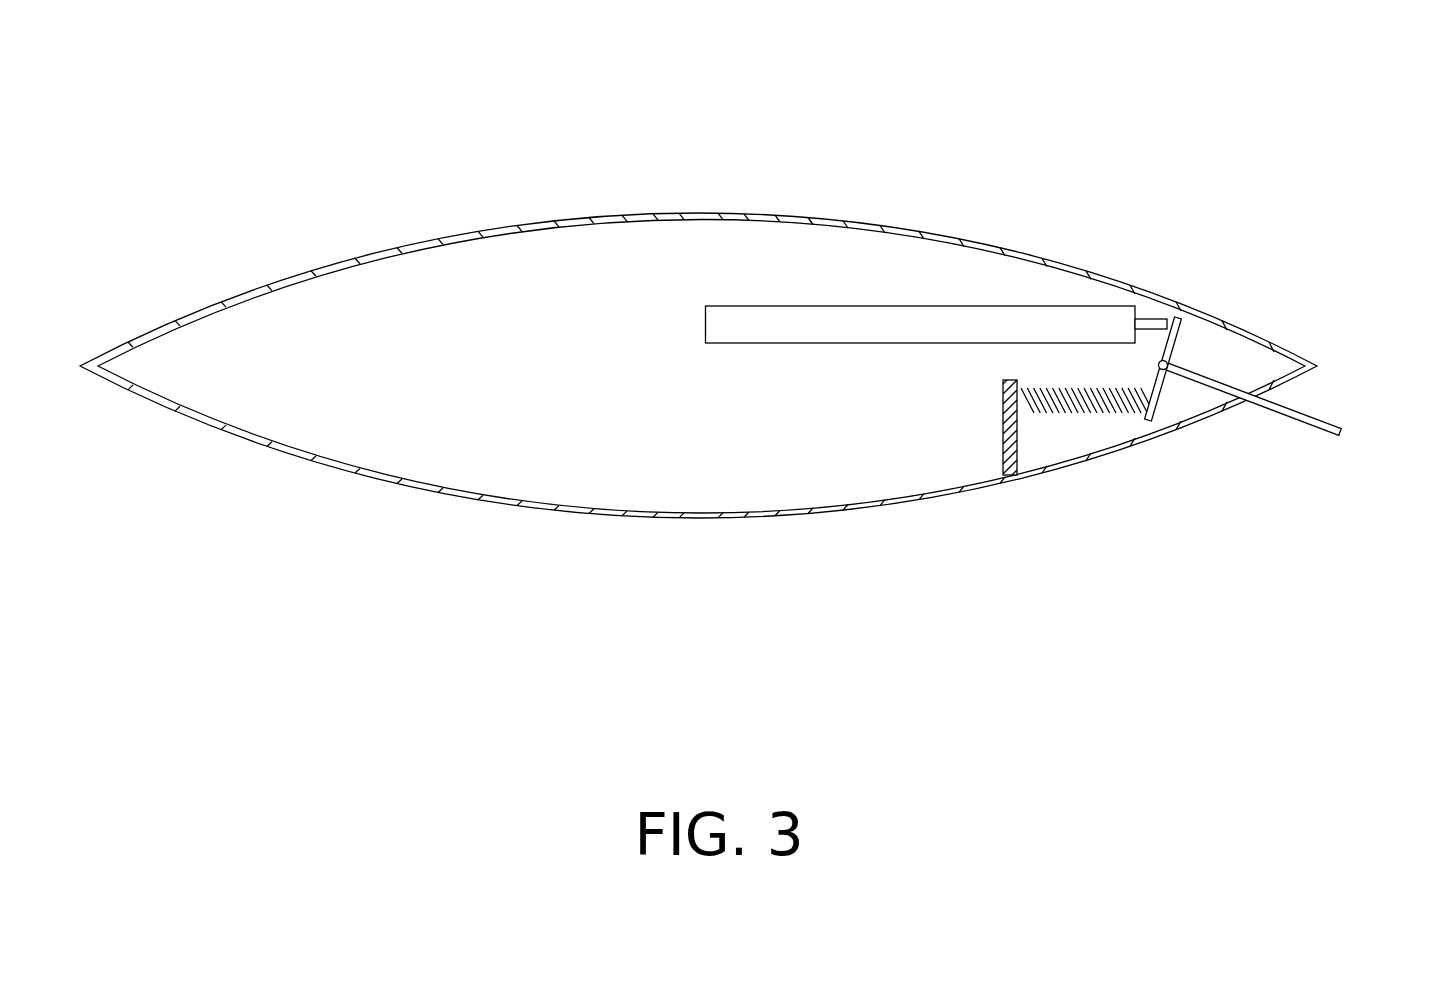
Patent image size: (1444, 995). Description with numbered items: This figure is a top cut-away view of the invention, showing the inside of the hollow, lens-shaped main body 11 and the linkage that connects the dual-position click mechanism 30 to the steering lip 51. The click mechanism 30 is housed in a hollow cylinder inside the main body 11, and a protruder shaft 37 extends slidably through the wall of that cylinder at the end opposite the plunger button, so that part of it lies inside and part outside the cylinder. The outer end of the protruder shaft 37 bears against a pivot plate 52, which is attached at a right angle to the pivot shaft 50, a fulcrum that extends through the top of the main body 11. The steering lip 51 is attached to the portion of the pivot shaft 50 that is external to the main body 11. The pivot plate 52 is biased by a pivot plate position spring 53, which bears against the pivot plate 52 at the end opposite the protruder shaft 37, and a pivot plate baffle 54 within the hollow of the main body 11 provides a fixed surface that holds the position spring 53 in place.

The main body 11 is at (565, 202).
The dual-position click mechanism 30 is at (814, 283).
The protruder shaft 37 is at (1158, 302).
The pivot shaft 50 is at (1169, 396).
The steering lip 51 is at (1352, 416).
The pivot plate 52 is at (1198, 333).
The pivot plate position spring 53 is at (1090, 436).
The pivot plate baffle 54 is at (987, 438).